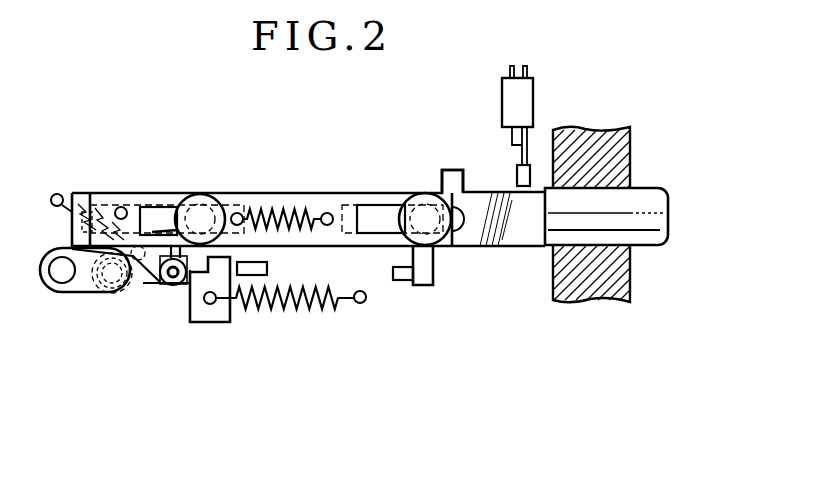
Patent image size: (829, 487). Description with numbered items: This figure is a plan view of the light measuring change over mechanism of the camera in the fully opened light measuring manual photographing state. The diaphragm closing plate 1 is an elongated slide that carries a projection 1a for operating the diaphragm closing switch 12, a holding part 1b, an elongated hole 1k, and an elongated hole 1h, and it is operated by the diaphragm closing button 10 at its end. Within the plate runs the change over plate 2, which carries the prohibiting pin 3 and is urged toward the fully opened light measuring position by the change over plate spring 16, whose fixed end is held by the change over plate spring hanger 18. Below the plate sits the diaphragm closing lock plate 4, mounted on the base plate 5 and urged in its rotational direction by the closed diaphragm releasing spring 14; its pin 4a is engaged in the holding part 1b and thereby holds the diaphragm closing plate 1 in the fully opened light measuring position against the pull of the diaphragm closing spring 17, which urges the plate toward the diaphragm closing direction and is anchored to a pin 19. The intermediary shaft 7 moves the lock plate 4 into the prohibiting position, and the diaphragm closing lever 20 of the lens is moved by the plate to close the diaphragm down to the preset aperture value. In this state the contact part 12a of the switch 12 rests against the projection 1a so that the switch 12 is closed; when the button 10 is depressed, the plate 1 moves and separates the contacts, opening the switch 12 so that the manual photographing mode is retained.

The diaphragm closing plate 1 is at (508, 240).
The projection 1a is at (452, 171).
The holding part 1b is at (158, 283).
The elongated hole 1h is at (382, 206).
The elongated hole 1k is at (158, 207).
The change over plate 2 is at (346, 205).
The prohibiting pin 3 is at (121, 207).
The diaphragm closing lock plate 4 is at (137, 290).
The pin 4a is at (180, 283).
The base plate 5 is at (78, 291).
The intermediary shaft 7 is at (406, 281).
The diaphragm closing button 10 is at (651, 190).
The diaphragm closing switch 12 is at (531, 95).
The contact part 12a is at (531, 176).
The closed diaphragm releasing spring 14 is at (70, 213).
The change over plate spring 16 is at (276, 212).
The diaphragm closing spring 17 is at (302, 310).
The change over plate spring hanger 18 is at (237, 213).
The pin 19 is at (360, 304).
The diaphragm closing lever 20 is at (267, 268).